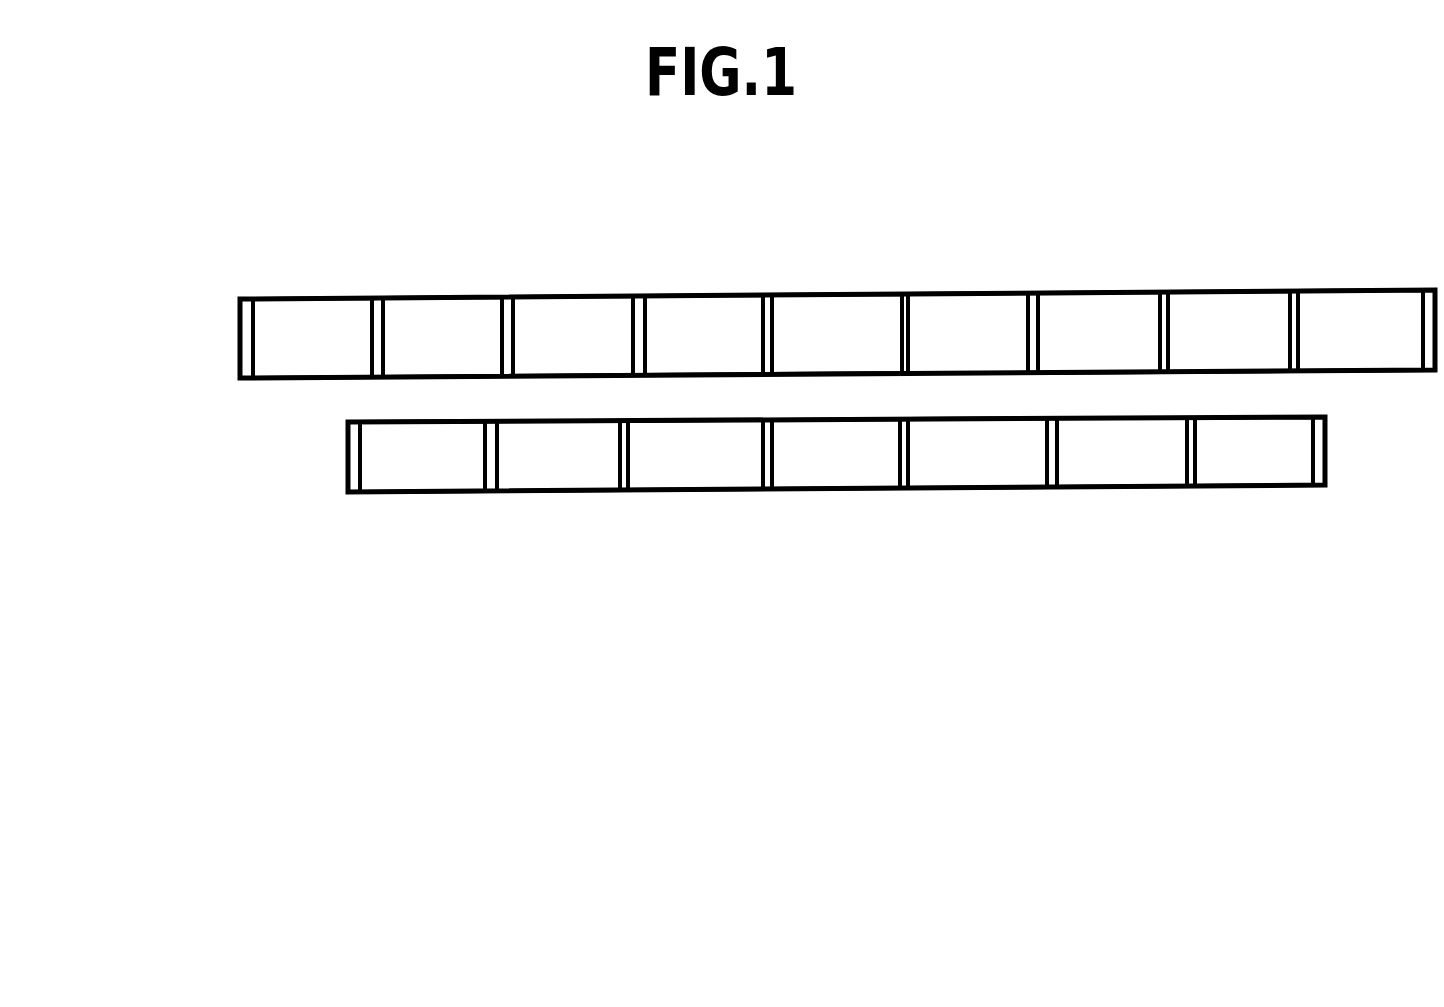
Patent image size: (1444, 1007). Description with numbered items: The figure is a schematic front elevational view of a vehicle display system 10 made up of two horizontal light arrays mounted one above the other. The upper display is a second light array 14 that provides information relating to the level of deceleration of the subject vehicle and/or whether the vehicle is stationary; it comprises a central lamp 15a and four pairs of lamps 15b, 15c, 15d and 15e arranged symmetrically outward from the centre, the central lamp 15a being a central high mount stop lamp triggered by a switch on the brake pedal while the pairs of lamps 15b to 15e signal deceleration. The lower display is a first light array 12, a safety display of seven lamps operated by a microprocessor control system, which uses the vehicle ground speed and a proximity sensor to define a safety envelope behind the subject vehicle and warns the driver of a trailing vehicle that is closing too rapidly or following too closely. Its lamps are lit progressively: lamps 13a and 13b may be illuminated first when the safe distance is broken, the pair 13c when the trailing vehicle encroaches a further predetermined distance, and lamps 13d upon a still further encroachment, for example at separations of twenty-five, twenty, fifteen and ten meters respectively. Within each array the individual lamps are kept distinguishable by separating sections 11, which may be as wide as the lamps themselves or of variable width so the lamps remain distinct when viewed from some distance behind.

The display system 10 is at (360, 580).
The separating section 11 is at (768, 297).
The first light array 12 is at (280, 460).
The lamp 13a is at (832, 458).
The lamp 13b is at (688, 467).
The lamp 13c is at (553, 472).
The lamp 13d is at (420, 477).
The second light array 14 is at (205, 328).
The central lamp 15a is at (818, 312).
The pair of lamps 15b is at (677, 322).
The pair of lamps 15c is at (550, 323).
The pair of lamps 15d is at (427, 322).
The pair of lamps 15e is at (297, 327).